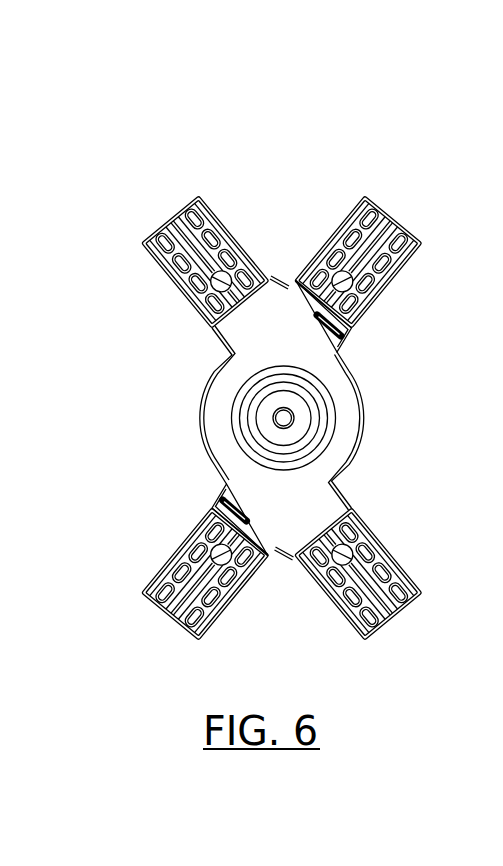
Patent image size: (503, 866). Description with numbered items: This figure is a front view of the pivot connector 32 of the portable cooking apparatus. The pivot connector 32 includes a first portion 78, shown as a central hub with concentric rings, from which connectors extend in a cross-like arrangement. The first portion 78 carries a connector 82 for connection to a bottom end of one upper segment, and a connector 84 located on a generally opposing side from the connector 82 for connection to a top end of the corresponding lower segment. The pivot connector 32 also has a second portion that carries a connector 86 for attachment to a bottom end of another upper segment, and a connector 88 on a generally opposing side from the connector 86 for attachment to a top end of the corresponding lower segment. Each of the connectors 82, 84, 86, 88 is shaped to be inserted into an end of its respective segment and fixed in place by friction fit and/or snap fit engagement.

The pivot connector 32 is at (146, 165).
The first portion 78 is at (344, 418).
The connector 82 is at (236, 216).
The connector 84 is at (413, 557).
The connector 86 is at (393, 312).
The connector 88 is at (231, 619).